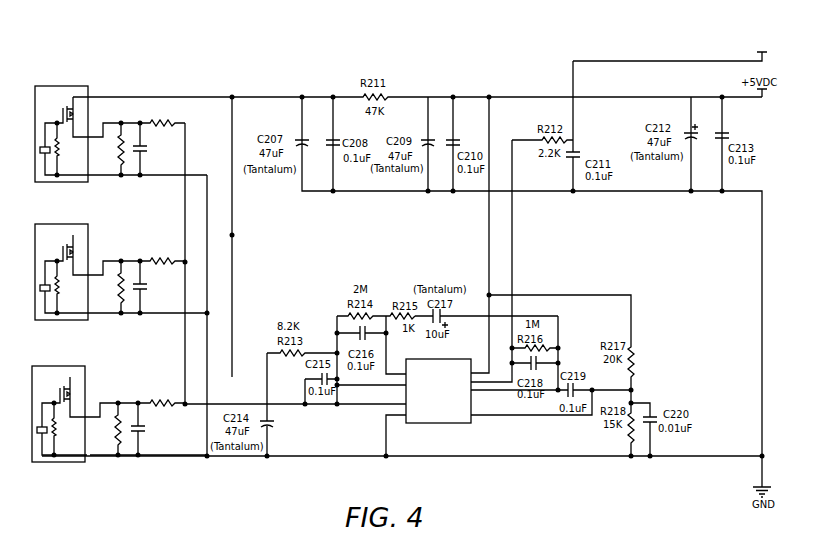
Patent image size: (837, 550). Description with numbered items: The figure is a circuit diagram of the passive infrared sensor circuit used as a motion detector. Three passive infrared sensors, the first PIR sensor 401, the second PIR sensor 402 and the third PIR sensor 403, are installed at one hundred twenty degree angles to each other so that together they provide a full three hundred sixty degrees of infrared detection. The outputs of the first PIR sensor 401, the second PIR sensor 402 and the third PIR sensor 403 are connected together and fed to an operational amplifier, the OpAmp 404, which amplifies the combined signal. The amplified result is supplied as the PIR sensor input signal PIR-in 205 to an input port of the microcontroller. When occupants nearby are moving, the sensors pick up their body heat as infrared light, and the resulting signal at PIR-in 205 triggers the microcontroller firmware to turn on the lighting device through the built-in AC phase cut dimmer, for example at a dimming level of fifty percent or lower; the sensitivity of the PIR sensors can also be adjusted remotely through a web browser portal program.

The PIR sensor PIR1 401 is at (117, 203).
The PIR sensor PIR2 402 is at (120, 340).
The PIR sensor PIR3 403 is at (114, 485).
The OpAmp U4 404 is at (465, 443).
The PIR-in 205 is at (740, 46).